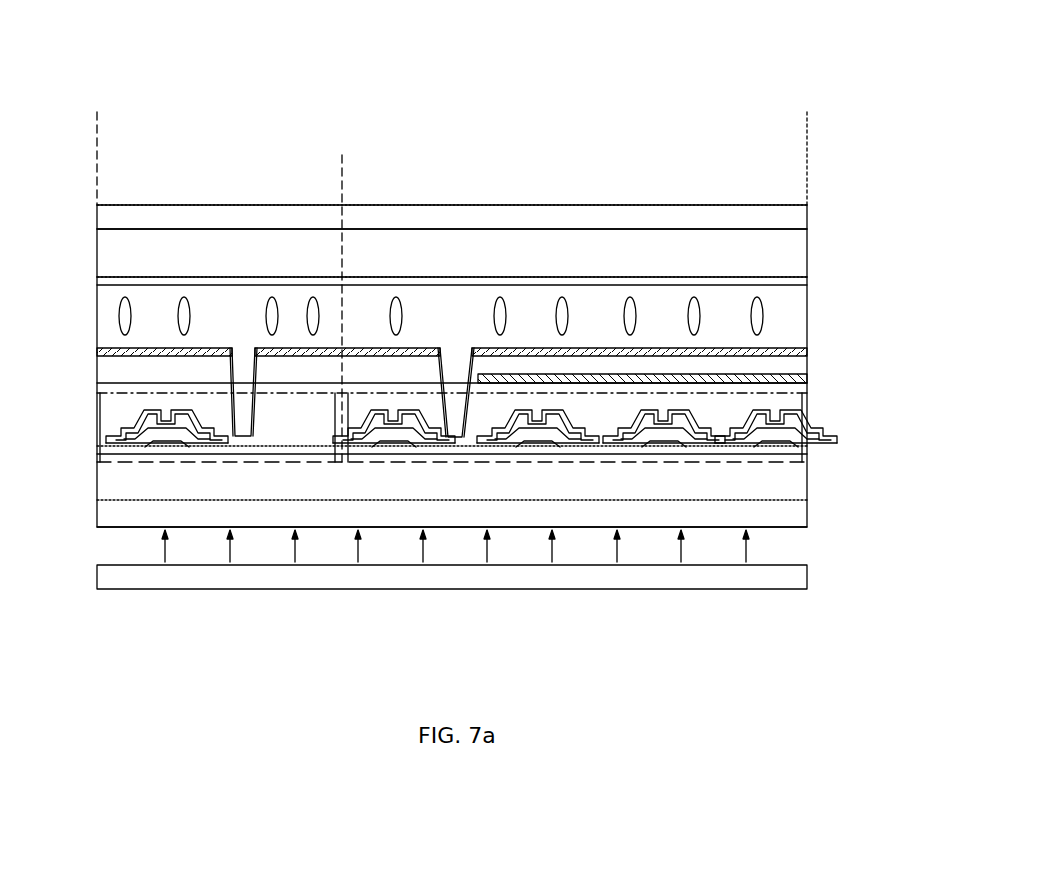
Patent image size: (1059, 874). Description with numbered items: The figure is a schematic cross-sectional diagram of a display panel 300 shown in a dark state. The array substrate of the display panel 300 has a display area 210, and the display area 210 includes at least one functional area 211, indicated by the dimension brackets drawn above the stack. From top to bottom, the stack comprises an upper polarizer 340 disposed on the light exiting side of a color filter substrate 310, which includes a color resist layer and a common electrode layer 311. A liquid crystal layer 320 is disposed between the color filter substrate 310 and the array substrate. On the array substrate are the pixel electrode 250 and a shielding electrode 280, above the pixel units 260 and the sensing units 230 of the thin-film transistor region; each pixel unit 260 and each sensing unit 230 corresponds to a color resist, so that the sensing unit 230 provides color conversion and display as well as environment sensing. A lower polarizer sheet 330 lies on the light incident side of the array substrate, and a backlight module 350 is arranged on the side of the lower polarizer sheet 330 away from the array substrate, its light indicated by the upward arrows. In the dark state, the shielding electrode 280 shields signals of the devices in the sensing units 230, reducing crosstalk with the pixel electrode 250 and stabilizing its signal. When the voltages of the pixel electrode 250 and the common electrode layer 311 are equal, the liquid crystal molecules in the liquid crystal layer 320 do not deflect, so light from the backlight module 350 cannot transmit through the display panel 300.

The display panel 300 is at (716, 96).
The display area 210 is at (807, 120).
The functional area 211 is at (807, 163).
The upper polarizer 340 is at (807, 218).
The color filter substrate 310 is at (807, 255).
The common electrode layer 311 is at (807, 280).
The liquid crystal layer 320 is at (763, 312).
The pixel electrode 250 is at (807, 350).
The shielding electrode 280 is at (807, 378).
The pixel unit 260 is at (110, 393).
The sensing unit 230 is at (807, 447).
The lower polarizer sheet 330 is at (807, 515).
The backlight module 350 is at (797, 577).